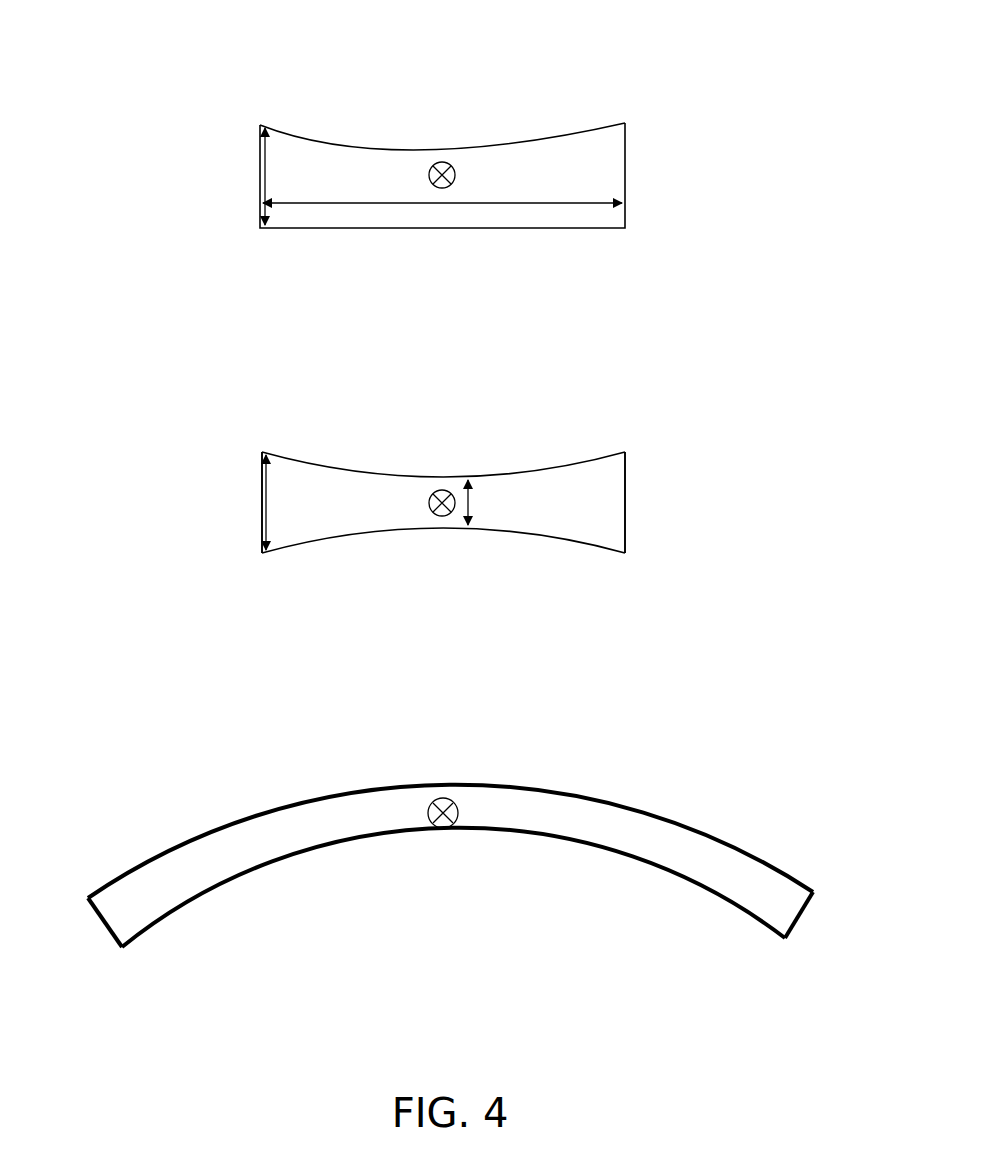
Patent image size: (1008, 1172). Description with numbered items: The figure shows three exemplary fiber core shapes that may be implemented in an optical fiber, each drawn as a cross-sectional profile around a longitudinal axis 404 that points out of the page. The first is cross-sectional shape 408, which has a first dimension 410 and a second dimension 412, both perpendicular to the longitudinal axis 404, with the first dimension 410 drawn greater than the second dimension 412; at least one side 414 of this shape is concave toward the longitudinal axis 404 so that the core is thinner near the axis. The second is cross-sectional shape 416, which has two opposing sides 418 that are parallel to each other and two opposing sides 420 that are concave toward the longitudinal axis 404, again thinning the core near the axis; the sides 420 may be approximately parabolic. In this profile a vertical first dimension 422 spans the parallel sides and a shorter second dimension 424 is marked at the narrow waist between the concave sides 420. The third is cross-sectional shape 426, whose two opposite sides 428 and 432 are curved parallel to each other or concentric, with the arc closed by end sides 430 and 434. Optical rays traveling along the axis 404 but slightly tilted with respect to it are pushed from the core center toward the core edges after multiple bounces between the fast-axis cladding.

The longitudinal axis 404 is at (427, 188).
The cross-sectional shape 408 is at (568, 97).
The first dimension 410 is at (457, 203).
The second dimension 412 is at (260, 158).
The side 414 is at (352, 143).
The cross-sectional shape 416 is at (573, 437).
The opposing sides 418 is at (257, 513).
The opposing sides 420 is at (643, 583).
The first dimension 422 is at (260, 477).
The second dimension 424 is at (477, 523).
The cross-sectional shape 426 is at (513, 772).
The side 428 is at (153, 853).
The side 430 is at (97, 917).
The side 432 is at (287, 868).
The side 434 is at (808, 917).